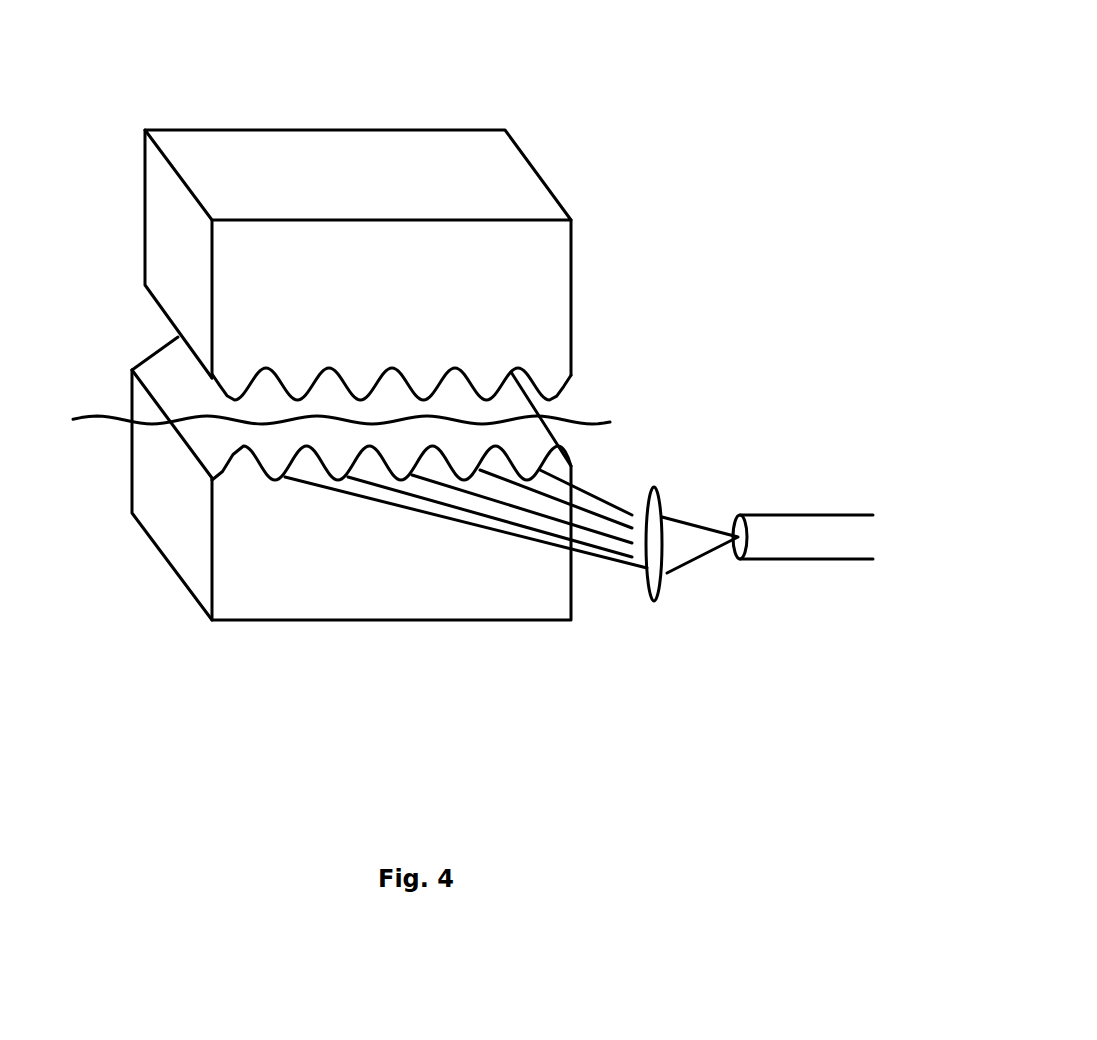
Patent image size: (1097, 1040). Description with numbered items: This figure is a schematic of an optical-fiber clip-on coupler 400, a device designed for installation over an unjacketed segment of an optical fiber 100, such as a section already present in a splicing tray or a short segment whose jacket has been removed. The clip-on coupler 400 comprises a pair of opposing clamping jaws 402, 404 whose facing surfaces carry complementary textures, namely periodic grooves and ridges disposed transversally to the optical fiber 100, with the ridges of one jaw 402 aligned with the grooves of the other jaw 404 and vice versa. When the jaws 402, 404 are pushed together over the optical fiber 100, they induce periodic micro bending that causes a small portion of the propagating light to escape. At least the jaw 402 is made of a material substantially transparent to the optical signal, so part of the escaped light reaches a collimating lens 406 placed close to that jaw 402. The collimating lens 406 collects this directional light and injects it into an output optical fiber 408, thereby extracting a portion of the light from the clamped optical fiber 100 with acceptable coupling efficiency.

The optical-fiber clip-on coupler 400 is at (189, 98).
The clamping jaw 402 is at (571, 275).
The clamping jaw 404 is at (255, 620).
The optical fiber 100 is at (73, 421).
The collimating lens 406 is at (661, 501).
The output optical fiber 408 is at (800, 558).